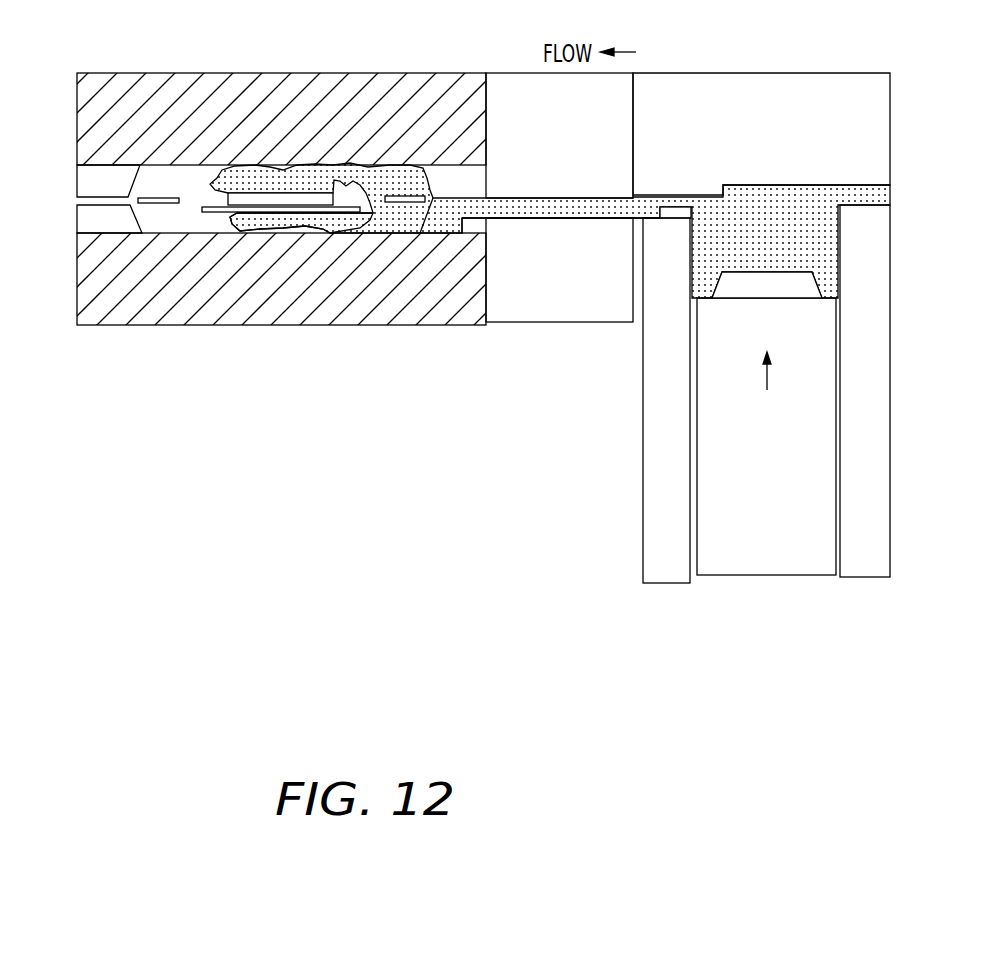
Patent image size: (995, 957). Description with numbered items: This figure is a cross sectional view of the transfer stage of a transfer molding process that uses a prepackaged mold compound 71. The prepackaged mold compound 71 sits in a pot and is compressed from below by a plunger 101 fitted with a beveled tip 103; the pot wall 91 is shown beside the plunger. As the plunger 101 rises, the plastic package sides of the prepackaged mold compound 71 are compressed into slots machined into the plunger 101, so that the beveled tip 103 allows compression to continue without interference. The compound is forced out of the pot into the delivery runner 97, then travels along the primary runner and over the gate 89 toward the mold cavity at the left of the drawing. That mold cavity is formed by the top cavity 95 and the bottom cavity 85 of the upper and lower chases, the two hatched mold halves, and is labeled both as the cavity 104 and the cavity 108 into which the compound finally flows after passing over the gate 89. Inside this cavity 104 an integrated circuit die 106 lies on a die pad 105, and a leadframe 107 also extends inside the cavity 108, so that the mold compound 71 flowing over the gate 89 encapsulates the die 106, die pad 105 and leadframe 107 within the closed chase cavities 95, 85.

The prepackaged mold compound 71 is at (781, 188).
The bottom cavity 85 is at (143, 213).
The gate 89 is at (434, 201).
The pot wall 91 is at (650, 502).
The top cavity 95 is at (143, 188).
The delivery runner 97 is at (675, 203).
The plunger 101 is at (787, 451).
The tip 103 is at (782, 293).
The cavity 104 is at (209, 205).
The die pad 105 is at (207, 213).
The integrated circuit die 106 is at (282, 200).
The leadframe 107 is at (163, 198).
The cavity 108 is at (480, 178).